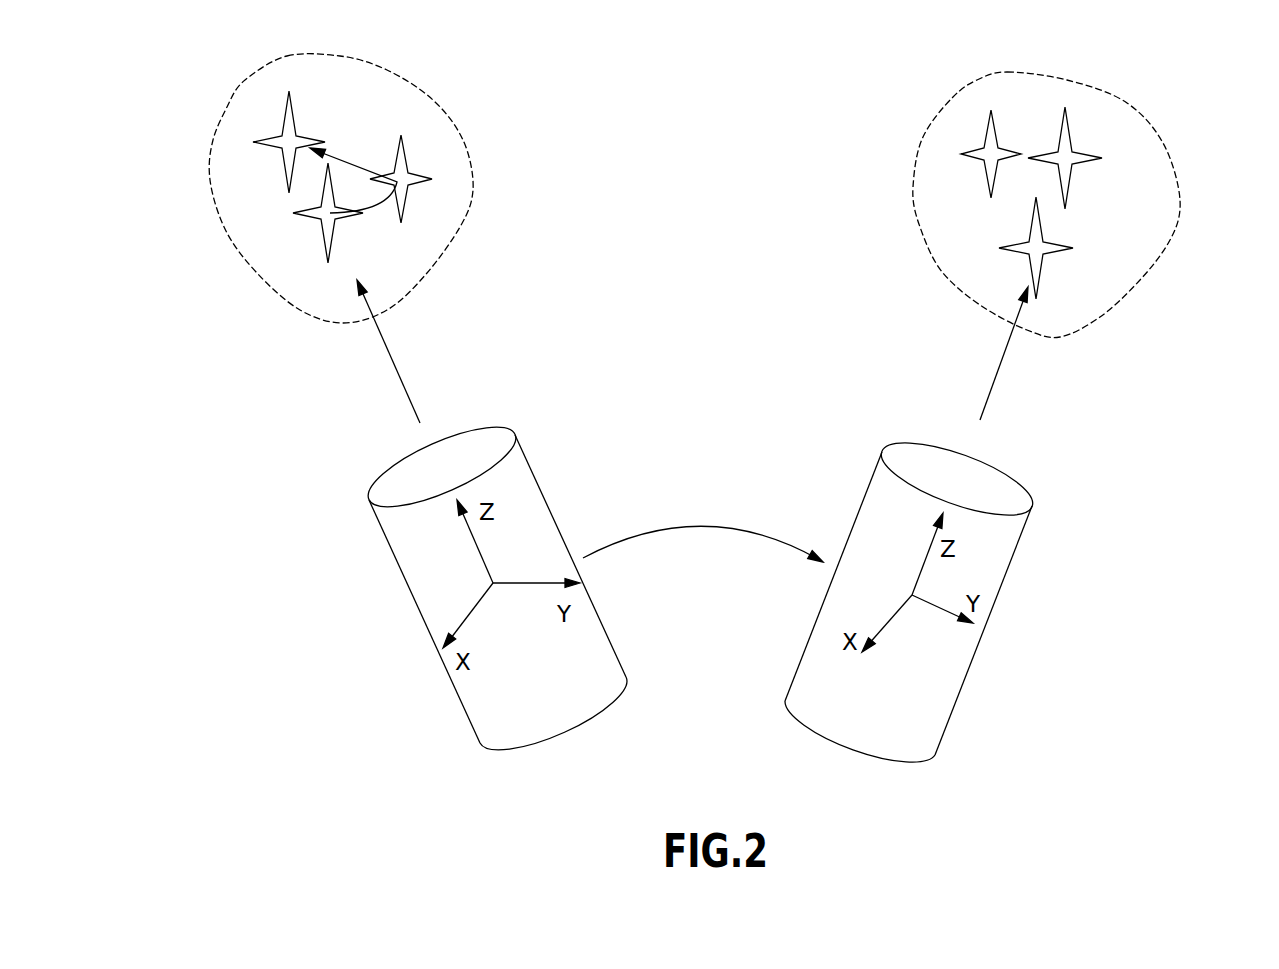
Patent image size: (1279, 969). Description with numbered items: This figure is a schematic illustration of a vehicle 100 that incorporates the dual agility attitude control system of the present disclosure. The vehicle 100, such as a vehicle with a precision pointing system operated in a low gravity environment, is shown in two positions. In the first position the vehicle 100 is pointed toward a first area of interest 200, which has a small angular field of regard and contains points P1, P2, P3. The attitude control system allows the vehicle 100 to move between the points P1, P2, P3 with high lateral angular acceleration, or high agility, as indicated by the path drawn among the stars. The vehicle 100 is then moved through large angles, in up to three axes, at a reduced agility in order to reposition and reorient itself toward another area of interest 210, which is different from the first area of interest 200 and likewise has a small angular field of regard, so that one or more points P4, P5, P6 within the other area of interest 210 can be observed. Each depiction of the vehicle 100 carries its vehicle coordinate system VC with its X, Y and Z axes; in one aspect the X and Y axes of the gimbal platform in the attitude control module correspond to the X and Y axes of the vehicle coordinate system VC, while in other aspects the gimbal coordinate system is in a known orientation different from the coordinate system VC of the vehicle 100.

The vehicle 100 is at (468, 715).
The first area of interest 200 is at (433, 103).
The other area of interest 210 is at (1157, 138).
The point P1 is at (312, 217).
The point P2 is at (403, 203).
The point P3 is at (297, 118).
The point P4 is at (1040, 272).
The point P5 is at (1068, 175).
The point P6 is at (995, 130).
The vehicle coordinate system VC is at (468, 613).